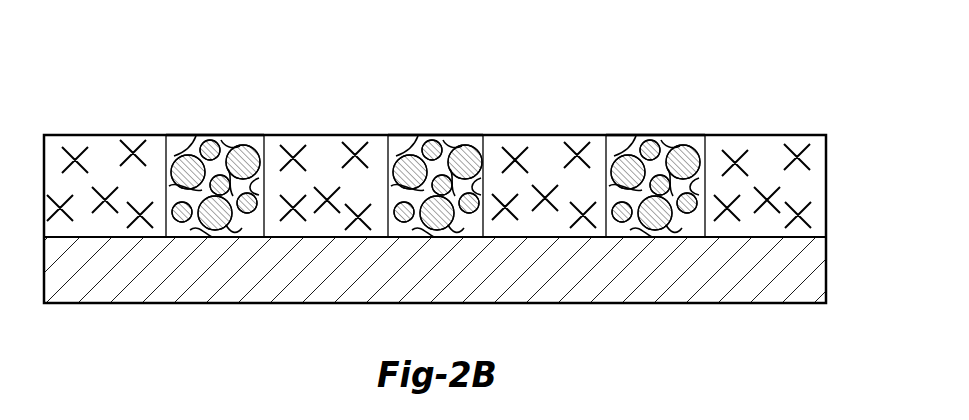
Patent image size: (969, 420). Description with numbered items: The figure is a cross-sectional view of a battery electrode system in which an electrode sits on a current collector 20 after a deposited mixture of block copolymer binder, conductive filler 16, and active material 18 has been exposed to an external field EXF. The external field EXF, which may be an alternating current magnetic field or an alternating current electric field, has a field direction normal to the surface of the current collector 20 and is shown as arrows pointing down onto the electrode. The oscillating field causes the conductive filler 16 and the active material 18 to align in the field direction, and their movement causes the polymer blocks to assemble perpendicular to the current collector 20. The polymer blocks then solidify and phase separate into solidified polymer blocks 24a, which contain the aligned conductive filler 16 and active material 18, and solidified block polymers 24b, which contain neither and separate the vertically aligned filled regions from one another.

The conductive filler 16 is at (438, 215).
The active material 18 is at (435, 248).
The current collector 20 is at (440, 294).
The solidified polymer blocks 24a is at (431, 207).
The solidified block polymers 24b is at (429, 158).
The external field EXF is at (436, 61).